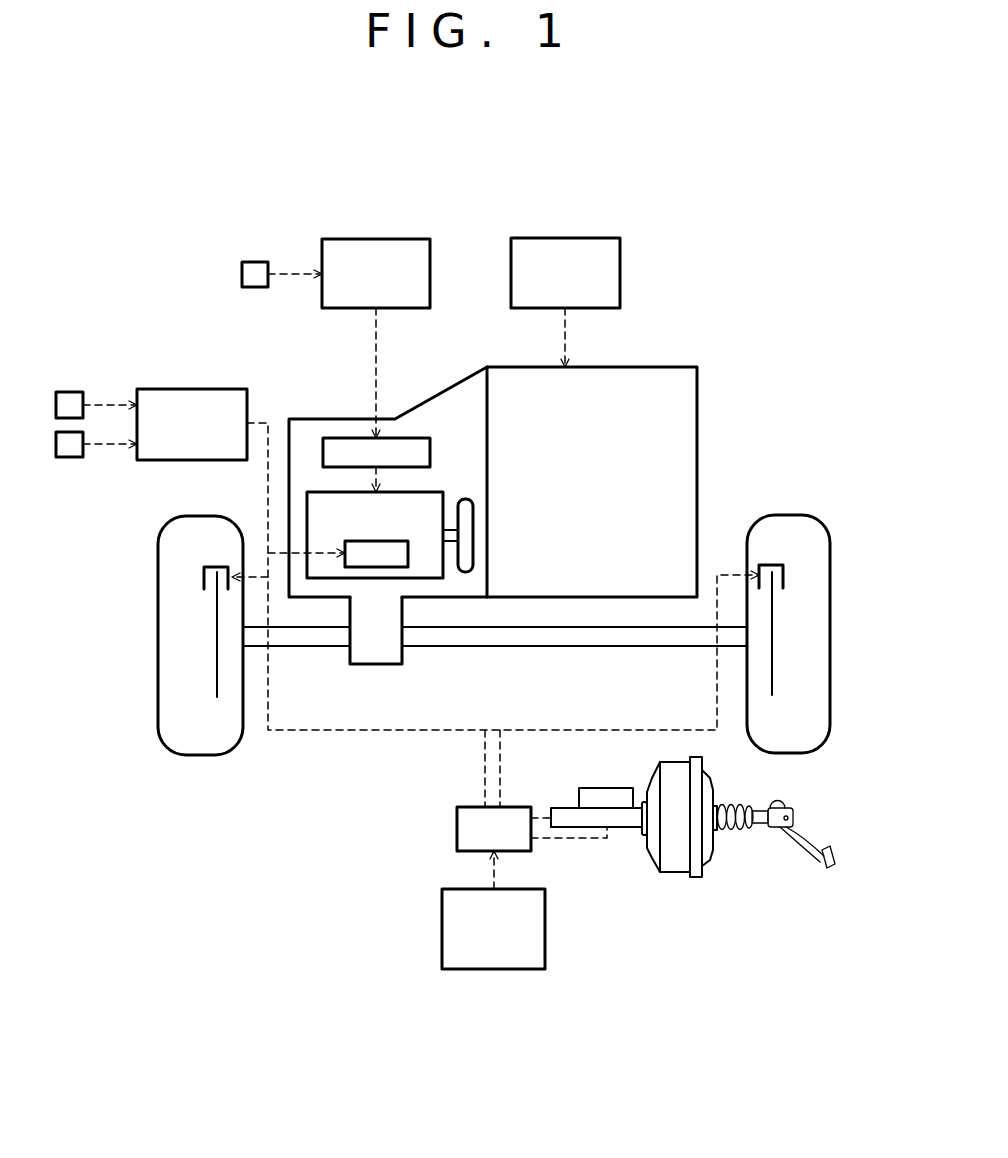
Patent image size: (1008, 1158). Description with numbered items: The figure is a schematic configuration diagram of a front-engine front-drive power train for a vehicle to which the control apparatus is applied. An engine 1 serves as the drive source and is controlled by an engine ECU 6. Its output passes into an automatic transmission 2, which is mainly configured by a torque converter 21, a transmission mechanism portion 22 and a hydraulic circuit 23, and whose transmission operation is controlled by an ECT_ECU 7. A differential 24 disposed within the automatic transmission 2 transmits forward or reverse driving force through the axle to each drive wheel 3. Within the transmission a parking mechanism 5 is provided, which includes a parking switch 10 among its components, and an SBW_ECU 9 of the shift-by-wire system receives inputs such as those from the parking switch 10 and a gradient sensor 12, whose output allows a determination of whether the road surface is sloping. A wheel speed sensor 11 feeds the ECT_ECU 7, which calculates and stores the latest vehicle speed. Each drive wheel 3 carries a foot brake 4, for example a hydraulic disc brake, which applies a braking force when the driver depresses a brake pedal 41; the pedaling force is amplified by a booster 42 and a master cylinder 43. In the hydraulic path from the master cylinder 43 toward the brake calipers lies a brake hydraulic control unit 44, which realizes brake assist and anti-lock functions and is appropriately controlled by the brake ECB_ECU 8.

The engine 1 is at (660, 367).
The automatic transmission 2 is at (440, 392).
The drive wheel 3 is at (197, 742).
The foot brake 4 is at (205, 655).
The parking mechanism 5 is at (372, 548).
The engine ECU 6 is at (565, 238).
The ECT_ECU 7 is at (379, 239).
The ECB_ECU 8 is at (450, 937).
The SBW_ECU 9 is at (190, 389).
The parking switch 10 is at (66, 392).
The wheel speed sensor 11 is at (255, 262).
The gradient sensor 12 is at (70, 457).
The torque converter 21 is at (466, 512).
The transmission mechanism portion 22 is at (422, 501).
The hydraulic circuit 23 is at (404, 453).
The differential 24 is at (372, 645).
The brake pedal 41 is at (794, 854).
The booster 42 is at (680, 855).
The master cylinder 43 is at (622, 820).
The brake hydraulic control unit 44 is at (467, 830).